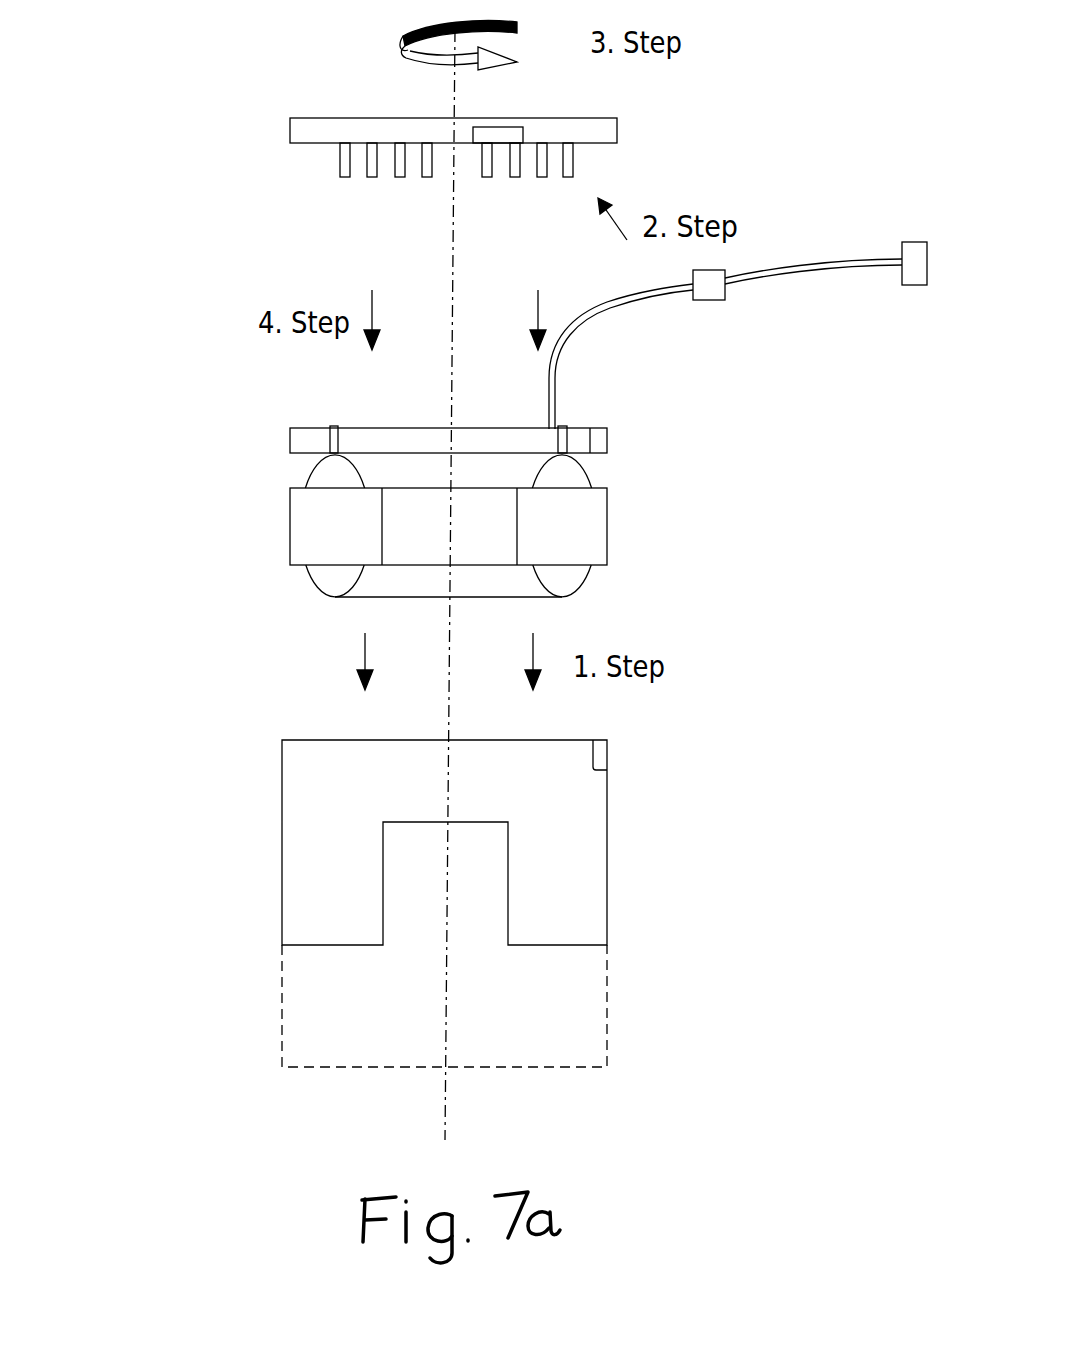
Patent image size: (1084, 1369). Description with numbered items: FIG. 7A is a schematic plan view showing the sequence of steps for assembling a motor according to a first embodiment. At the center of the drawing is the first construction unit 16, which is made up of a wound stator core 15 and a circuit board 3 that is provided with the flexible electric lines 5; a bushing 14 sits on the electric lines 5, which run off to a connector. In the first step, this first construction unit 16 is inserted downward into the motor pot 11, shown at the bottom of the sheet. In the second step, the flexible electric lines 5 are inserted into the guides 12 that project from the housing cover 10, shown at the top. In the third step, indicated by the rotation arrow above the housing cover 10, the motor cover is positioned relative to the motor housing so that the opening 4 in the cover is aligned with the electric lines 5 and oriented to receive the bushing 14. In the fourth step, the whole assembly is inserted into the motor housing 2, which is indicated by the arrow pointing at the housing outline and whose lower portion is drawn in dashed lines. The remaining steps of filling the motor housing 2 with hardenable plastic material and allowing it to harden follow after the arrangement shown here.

The motor housing 2 is at (464, 903).
The circuit board 3 is at (580, 440).
The opening 4 is at (498, 136).
The electric lines 5 is at (643, 298).
The housing cover 10 is at (308, 132).
The motor pot 11 is at (577, 835).
The guides 12 is at (327, 172).
The bushing 14 is at (712, 287).
The wound stator core 15 is at (577, 520).
The first construction unit 16 is at (858, 398).